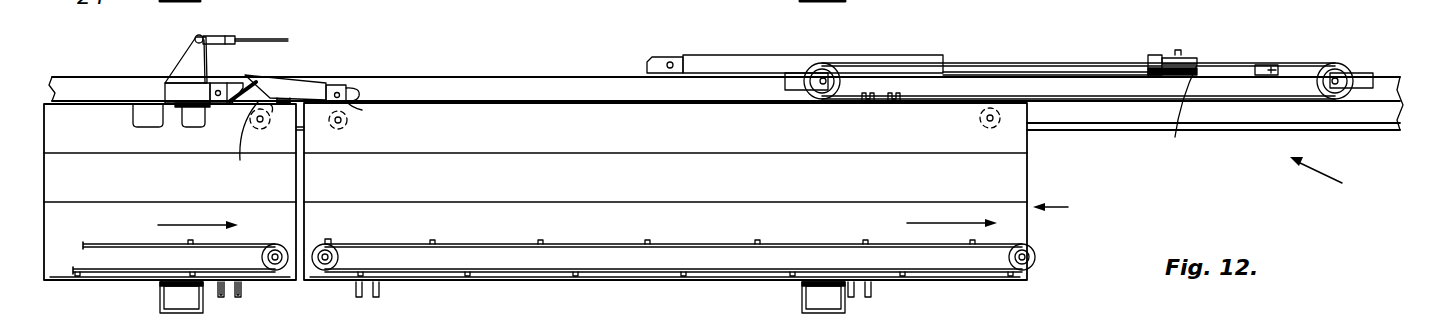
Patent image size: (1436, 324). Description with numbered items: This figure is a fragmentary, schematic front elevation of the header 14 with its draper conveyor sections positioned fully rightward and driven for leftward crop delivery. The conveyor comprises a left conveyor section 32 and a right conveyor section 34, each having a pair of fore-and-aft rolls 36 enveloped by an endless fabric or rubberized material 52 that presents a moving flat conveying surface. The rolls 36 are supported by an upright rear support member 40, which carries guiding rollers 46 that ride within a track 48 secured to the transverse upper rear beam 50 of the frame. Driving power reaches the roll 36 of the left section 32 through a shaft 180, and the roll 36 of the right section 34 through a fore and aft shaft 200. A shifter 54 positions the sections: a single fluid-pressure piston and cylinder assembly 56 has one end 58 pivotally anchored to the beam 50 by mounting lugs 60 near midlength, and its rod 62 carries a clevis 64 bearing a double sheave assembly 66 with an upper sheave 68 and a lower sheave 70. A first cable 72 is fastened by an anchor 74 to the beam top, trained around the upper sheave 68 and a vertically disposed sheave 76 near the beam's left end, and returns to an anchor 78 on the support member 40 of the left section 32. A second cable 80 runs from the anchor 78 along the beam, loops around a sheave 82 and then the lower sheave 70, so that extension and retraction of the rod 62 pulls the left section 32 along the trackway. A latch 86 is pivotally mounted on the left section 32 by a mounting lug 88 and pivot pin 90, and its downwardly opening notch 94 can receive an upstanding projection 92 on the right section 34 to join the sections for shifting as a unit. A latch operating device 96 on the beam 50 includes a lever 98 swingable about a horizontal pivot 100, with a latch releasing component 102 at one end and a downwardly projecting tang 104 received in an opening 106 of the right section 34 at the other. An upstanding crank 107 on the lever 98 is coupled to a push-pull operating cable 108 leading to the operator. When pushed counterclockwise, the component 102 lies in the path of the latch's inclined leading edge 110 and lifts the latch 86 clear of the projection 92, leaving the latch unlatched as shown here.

The header 14 is at (1330, 177).
The left conveyor section 32 is at (1065, 214).
The right conveyor section 34 is at (100, 285).
The rolls 36 is at (275, 272).
The rear support member 40 is at (55, 172).
The supporting and guiding rollers 46 is at (263, 145).
The track 48 is at (1097, 128).
The upper rear beam 50 is at (523, 83).
The endless fabric or rubberized material 52 is at (127, 238).
The shifter 54 is at (790, 105).
The piston and cylinder assembly 56 is at (893, 47).
The cylinder end 58 is at (682, 57).
The mounting lugs 60 is at (655, 63).
The rod 62 is at (1098, 62).
The clevis 64 is at (1145, 55).
The double sheave assembly 66 is at (1212, 50).
The upper sheave 68 is at (1197, 58).
The lower sheave 70 is at (1184, 115).
The first cable 72 is at (1270, 113).
The anchor 74 is at (1277, 73).
The sheave 76 is at (1343, 67).
The anchor 78 is at (882, 103).
The second cable 80 is at (997, 66).
The sheave 82 is at (819, 101).
The latch 86 is at (338, 68).
The mounting lug 88 is at (355, 105).
The pivot pin 90 is at (347, 92).
The upstanding projection 92 is at (267, 124).
The notch 94 is at (288, 86).
The latch operating device 96 is at (160, 66).
The lever 98 is at (180, 93).
The pivot 100 is at (218, 98).
The latch releasing component 102 is at (243, 76).
The tang 104 is at (148, 127).
The opening 106 is at (178, 122).
The crank 107 is at (192, 57).
The operating cable 108 is at (290, 40).
The inclined leading edge 110 is at (243, 143).
The shaft 180 is at (330, 248).
The fore and aft shaft 200 is at (285, 235).